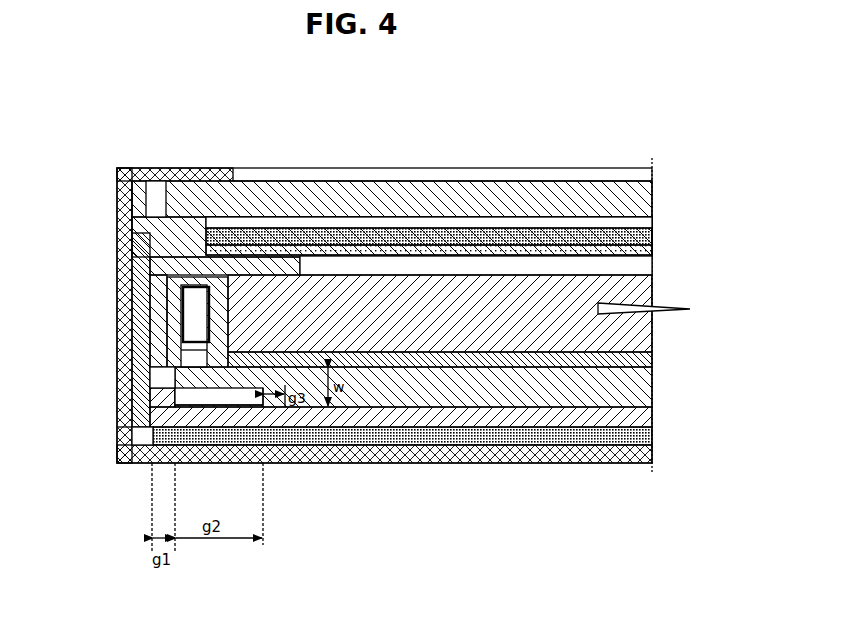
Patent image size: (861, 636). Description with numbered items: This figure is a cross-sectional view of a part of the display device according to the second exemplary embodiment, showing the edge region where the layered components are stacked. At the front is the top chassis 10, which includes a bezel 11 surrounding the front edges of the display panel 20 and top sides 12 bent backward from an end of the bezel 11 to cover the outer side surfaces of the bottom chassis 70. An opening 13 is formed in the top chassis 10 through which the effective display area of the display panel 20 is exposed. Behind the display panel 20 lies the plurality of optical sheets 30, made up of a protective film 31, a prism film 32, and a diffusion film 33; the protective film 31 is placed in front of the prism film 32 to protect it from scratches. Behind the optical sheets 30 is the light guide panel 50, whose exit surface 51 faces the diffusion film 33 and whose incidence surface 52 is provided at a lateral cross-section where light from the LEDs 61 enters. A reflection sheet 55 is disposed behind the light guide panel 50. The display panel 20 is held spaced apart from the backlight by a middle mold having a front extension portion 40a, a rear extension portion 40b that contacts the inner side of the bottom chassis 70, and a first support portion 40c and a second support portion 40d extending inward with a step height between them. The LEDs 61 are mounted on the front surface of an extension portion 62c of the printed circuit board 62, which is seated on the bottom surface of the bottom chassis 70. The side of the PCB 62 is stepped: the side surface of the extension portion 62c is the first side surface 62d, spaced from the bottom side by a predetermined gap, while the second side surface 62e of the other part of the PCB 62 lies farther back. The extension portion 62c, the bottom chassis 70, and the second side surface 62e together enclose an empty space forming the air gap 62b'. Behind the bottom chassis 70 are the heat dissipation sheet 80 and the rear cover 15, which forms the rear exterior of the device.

The top chassis 10 is at (106, 161).
The bezel 11 is at (158, 168).
The top sides 12 is at (117, 224).
The opening 13 is at (259, 180).
The rear cover 15 is at (138, 438).
The display panel 20 is at (355, 180).
The optical sheets 30 is at (711, 205).
The protective film 31 is at (655, 219).
The prism film 32 is at (655, 237).
The diffusion film 33 is at (655, 252).
The front extension portion 40a is at (120, 200).
The rear extension portion 40b is at (138, 290).
The first support portion 40c is at (192, 200).
The second support portion 40d is at (297, 262).
The light guide panel 50 is at (669, 331).
The exit surface 51 is at (427, 273).
The incidence surface 52 is at (205, 345).
The reflection sheet 55 is at (655, 358).
The LEDs 61 is at (188, 332).
The printed circuit board 62 is at (655, 385).
The air gap 62b' is at (219, 450).
The extension portion 62c is at (190, 397).
The first side surface 62d is at (160, 378).
The second side surface 62e is at (259, 409).
The bottom chassis 70 is at (655, 414).
The heat dissipation sheet 80 is at (655, 437).